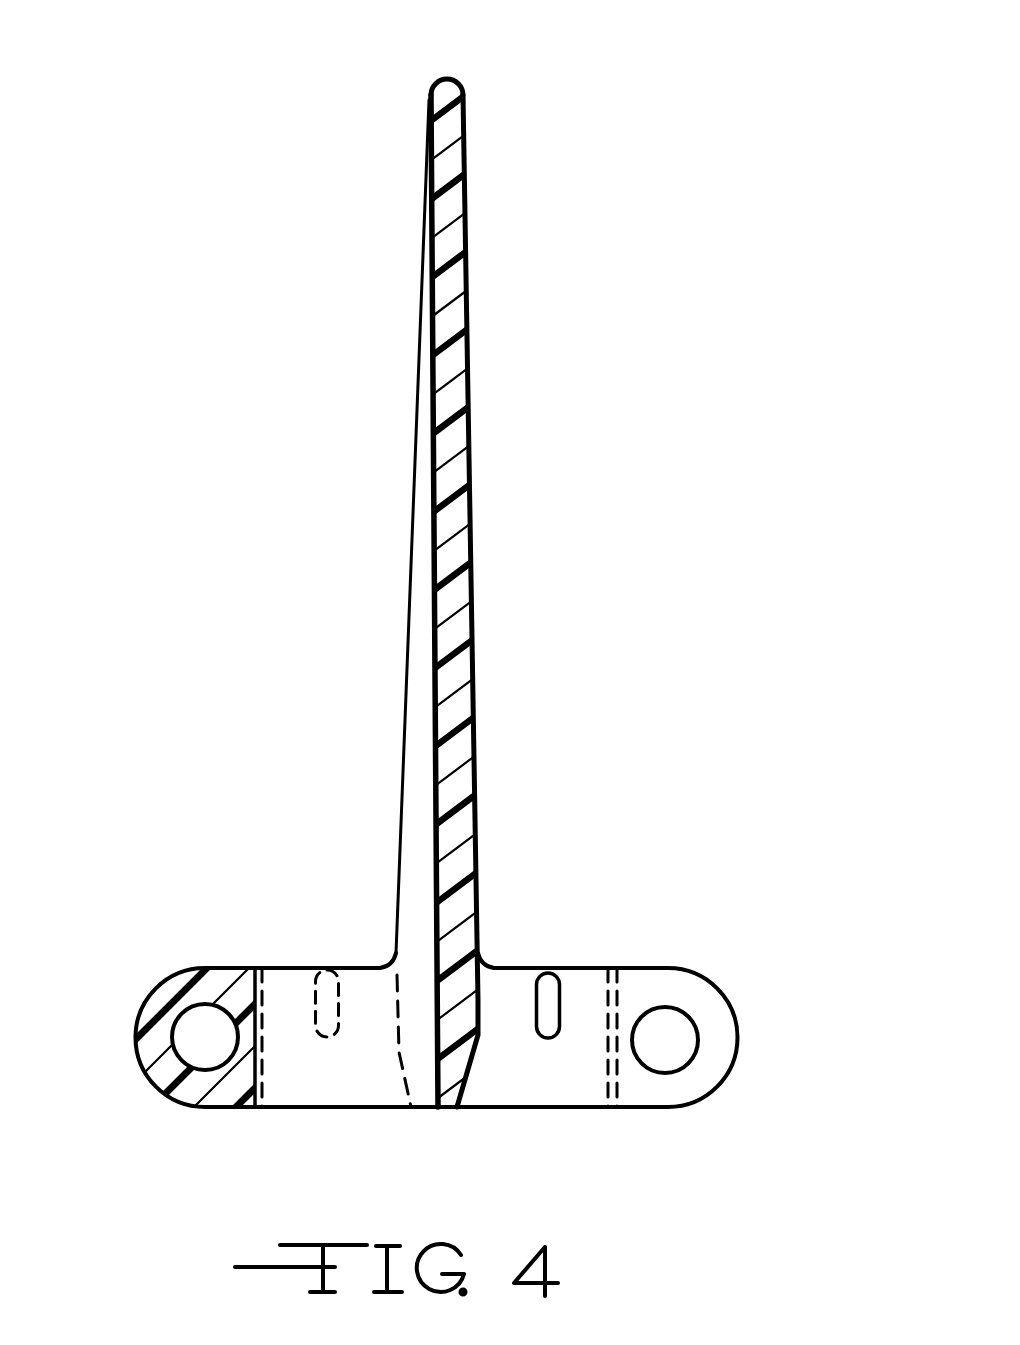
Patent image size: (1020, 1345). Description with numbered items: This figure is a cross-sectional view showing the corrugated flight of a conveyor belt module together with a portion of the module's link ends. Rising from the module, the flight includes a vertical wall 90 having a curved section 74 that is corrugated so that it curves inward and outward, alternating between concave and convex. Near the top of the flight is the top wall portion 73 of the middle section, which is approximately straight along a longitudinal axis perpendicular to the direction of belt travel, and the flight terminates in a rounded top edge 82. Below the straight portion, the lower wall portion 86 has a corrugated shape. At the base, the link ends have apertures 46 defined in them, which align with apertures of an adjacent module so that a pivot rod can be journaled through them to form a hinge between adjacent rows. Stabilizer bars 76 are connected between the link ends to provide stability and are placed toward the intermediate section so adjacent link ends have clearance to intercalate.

The apertures 46 is at (186, 1069).
The top wall portion 73 is at (490, 118).
The curved section 74 is at (420, 545).
The stabilizer bars 76 is at (547, 987).
The top edge 82 is at (448, 77).
The lower wall portion 86 is at (380, 776).
The vertical wall 90 is at (437, 652).